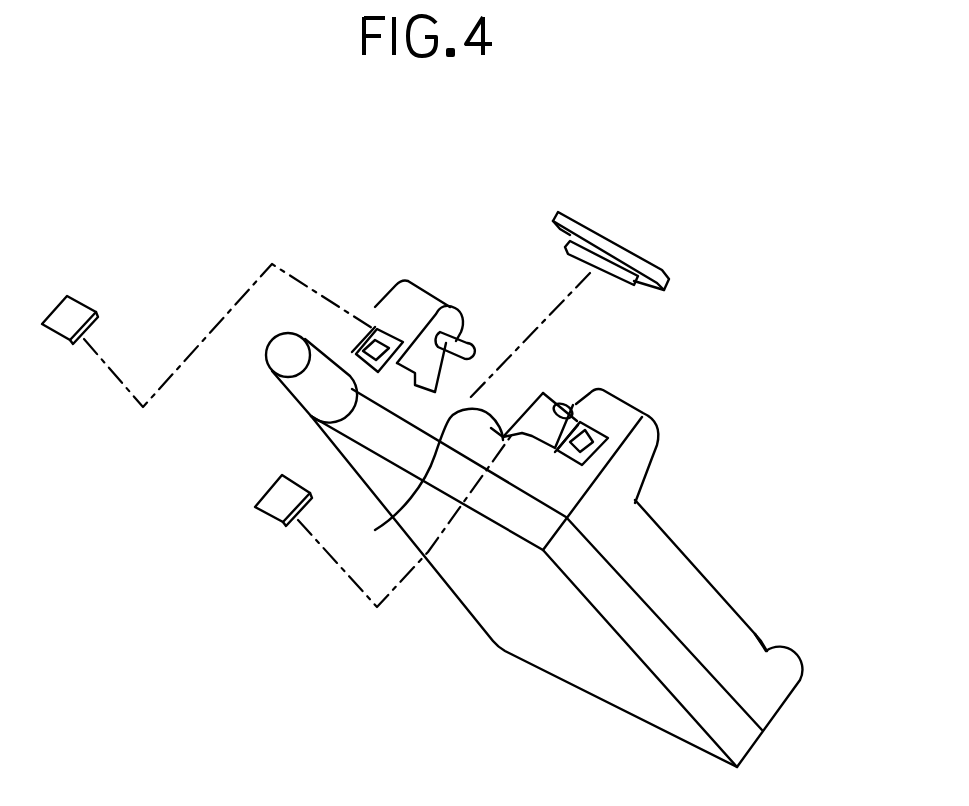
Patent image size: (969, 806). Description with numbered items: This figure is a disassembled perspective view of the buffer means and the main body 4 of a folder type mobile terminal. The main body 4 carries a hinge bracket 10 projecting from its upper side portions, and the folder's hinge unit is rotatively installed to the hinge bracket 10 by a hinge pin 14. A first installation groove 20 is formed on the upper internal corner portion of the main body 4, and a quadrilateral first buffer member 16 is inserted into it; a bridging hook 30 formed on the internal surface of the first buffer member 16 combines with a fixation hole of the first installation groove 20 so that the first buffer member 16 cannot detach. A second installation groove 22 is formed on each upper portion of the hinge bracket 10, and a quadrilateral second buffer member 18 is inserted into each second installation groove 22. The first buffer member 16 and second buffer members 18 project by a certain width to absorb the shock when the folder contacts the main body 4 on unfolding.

The main body 4 is at (797, 663).
The hinge bracket 10 is at (613, 413).
The hinge pin 14 is at (464, 341).
The first buffer member 16 is at (607, 242).
The second buffer member 18 is at (66, 313).
The first installation groove 20 is at (377, 529).
The second installation groove 22 is at (356, 338).
The bridging hook 30 is at (622, 283).